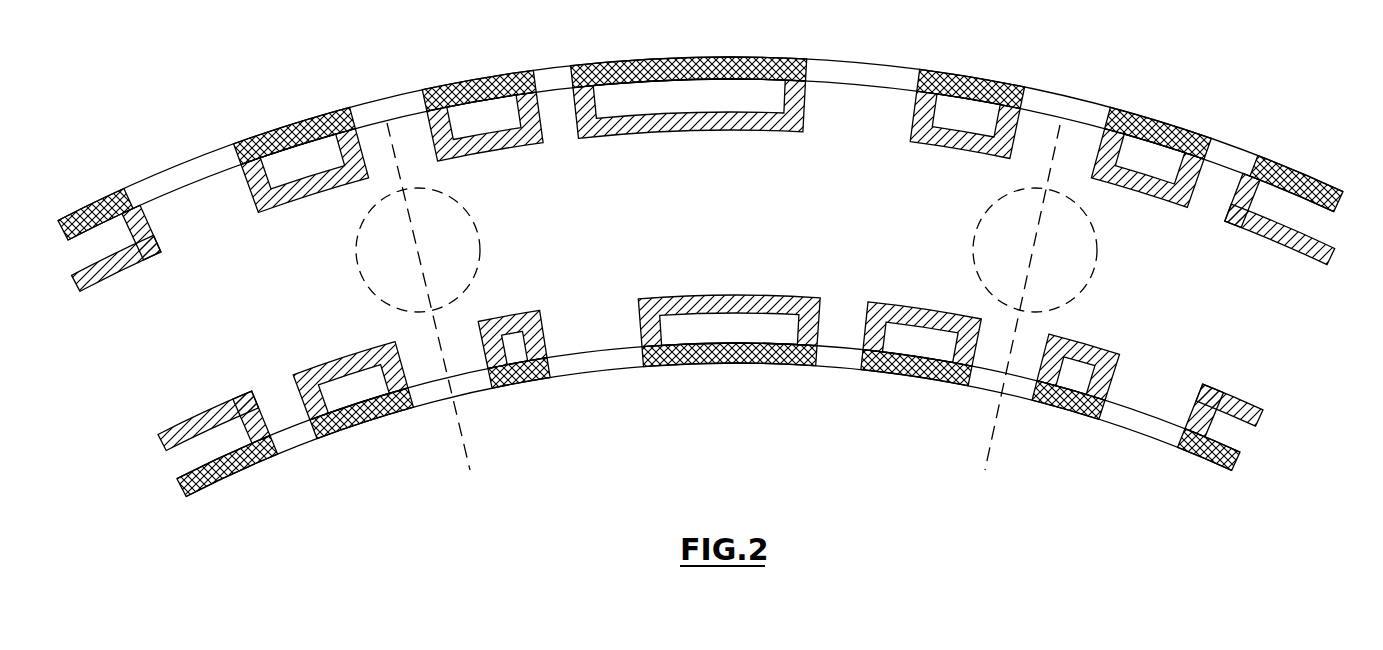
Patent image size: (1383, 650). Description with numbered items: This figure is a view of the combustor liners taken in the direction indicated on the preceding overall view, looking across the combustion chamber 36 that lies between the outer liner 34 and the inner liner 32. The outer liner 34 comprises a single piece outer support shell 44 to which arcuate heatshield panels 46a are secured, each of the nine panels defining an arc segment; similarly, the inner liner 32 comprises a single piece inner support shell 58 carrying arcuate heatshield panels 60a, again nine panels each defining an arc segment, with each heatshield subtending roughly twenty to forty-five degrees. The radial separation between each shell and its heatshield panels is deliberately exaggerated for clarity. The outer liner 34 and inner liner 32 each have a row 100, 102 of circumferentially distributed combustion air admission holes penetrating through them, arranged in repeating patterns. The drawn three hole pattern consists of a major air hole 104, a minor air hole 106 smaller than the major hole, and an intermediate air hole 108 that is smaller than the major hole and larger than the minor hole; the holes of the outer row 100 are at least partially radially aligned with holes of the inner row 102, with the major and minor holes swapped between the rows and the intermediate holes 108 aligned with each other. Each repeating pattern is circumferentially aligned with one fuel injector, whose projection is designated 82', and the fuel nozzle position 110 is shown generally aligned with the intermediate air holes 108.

The inner liner 32 is at (1262, 447).
The outer liner 34 is at (1335, 228).
The combustion chamber 36 is at (776, 226).
The outer support shell 44 is at (1330, 180).
The arcuate heatshield panel 46a is at (120, 278).
The inner support shell 58 is at (710, 365).
The arcuate heatshield panel 60a is at (200, 412).
The fuel injector projection 82' is at (755, 264).
The outer row of combustion air holes 100 is at (1212, 235).
The inner row of combustion air holes 102 is at (1160, 465).
The major air hole 104 is at (238, 150).
The minor air hole 106 is at (537, 70).
The intermediate air hole 108 is at (345, 100).
The fuel nozzle position 110 is at (430, 178).